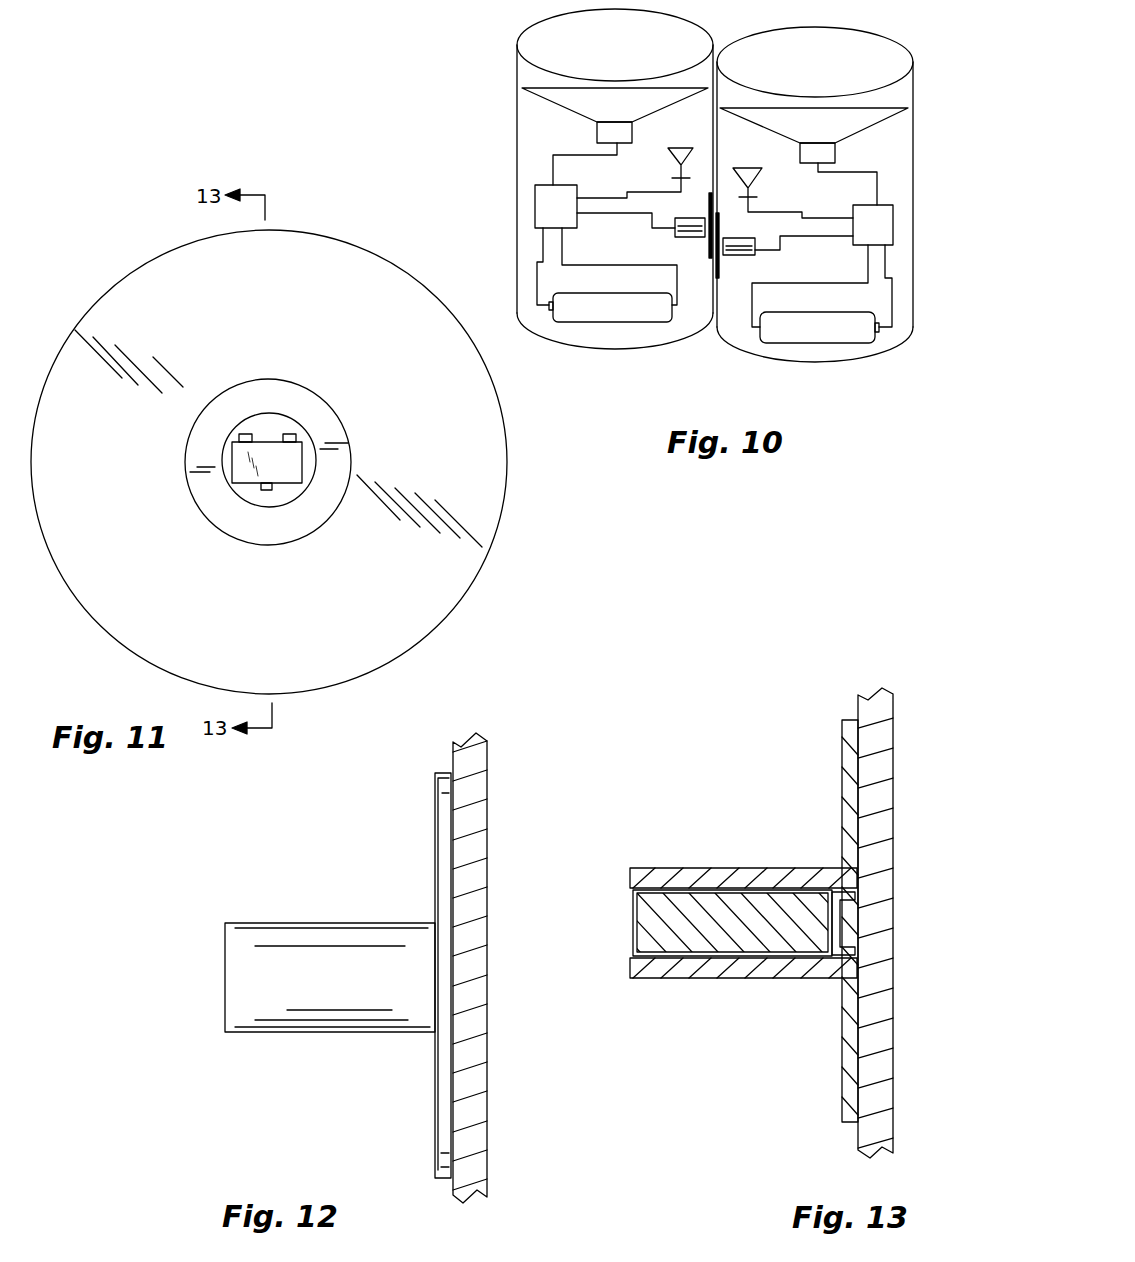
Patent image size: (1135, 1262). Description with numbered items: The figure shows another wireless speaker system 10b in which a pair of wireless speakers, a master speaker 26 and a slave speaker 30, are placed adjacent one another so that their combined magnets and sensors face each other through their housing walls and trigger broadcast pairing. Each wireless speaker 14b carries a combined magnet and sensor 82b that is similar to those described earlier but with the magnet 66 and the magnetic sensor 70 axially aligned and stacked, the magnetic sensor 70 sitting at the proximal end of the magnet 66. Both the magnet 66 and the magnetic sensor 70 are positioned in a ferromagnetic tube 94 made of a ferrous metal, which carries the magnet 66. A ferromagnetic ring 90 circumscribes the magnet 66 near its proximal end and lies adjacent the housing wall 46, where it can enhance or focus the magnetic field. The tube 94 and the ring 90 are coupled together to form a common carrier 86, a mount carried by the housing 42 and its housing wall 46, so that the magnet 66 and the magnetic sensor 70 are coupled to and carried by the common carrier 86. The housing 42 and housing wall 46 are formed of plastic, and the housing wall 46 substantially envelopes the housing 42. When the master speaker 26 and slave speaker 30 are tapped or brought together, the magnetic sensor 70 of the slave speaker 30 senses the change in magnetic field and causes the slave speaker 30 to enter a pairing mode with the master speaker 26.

In FIG. 10, the wireless speaker system 10b is at (822, 21).
In FIG. 10, the wireless speaker 14b is at (516, 287).
In FIG. 12, the wireless speaker 14b is at (453, 1183).
In FIG. 13, the wireless speaker 14b is at (858, 1135).
In FIG. 10, the master speaker 26 is at (583, 345).
In FIG. 10, the slave speaker 30 is at (833, 358).
In FIG. 10, the combined magnet and sensor 82b is at (688, 235).
In FIG. 11, the combined magnet and sensor 82b is at (118, 664).
In FIG. 12, the combined magnet and sensor 82b is at (353, 1012).
In FIG. 13, the combined magnet and sensor 82b is at (760, 963).
In FIG. 11, the ferromagnetic tube 94 is at (242, 405).
In FIG. 12, the ferromagnetic tube 94 is at (247, 920).
In FIG. 13, the ferromagnetic tube 94 is at (647, 870).
In FIG. 11, the magnetic sensor 70 is at (281, 452).
In FIG. 12, the magnetic sensor 70 is at (430, 975).
In FIG. 13, the magnetic sensor 70 is at (843, 923).
In FIG. 11, the common carrier 86 is at (483, 500).
In FIG. 12, the common carrier 86 is at (442, 1102).
In FIG. 13, the common carrier 86 is at (845, 1052).
In FIG. 11, the ferromagnetic ring 90 is at (448, 570).
In FIG. 12, the ferromagnetic ring 90 is at (438, 815).
In FIG. 13, the ferromagnetic ring 90 is at (843, 767).
In FIG. 11, the magnet 66 is at (278, 490).
In FIG. 12, the magnet 66 is at (293, 983).
In FIG. 13, the magnet 66 is at (698, 937).
In FIG. 12, the housing wall 46 is at (473, 758).
In FIG. 13, the housing wall 46 is at (877, 710).
In FIG. 12, the housing 42 is at (472, 1203).
In FIG. 13, the housing 42 is at (877, 1153).